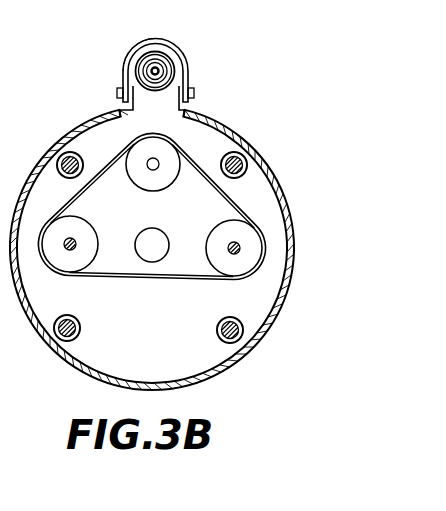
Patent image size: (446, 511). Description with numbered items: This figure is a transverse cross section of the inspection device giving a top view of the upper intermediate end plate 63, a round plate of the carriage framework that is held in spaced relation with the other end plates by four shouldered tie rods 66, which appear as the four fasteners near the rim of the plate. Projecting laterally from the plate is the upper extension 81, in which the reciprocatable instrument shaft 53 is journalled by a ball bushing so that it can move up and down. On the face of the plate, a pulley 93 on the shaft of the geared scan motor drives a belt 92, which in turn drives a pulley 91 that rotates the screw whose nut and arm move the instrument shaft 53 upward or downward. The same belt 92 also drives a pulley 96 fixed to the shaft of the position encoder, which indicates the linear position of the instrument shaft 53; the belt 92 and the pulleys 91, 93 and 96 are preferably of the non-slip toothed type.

The instrument shaft 53 is at (160, 62).
The upper extension 81 is at (153, 106).
The shouldered tie rods 66 is at (243, 157).
The upper intermediate end plate 63 is at (252, 201).
The pulley 91 is at (149, 191).
The pulley 96 is at (84, 220).
The pulley 93 is at (206, 249).
The belt 92 is at (187, 276).